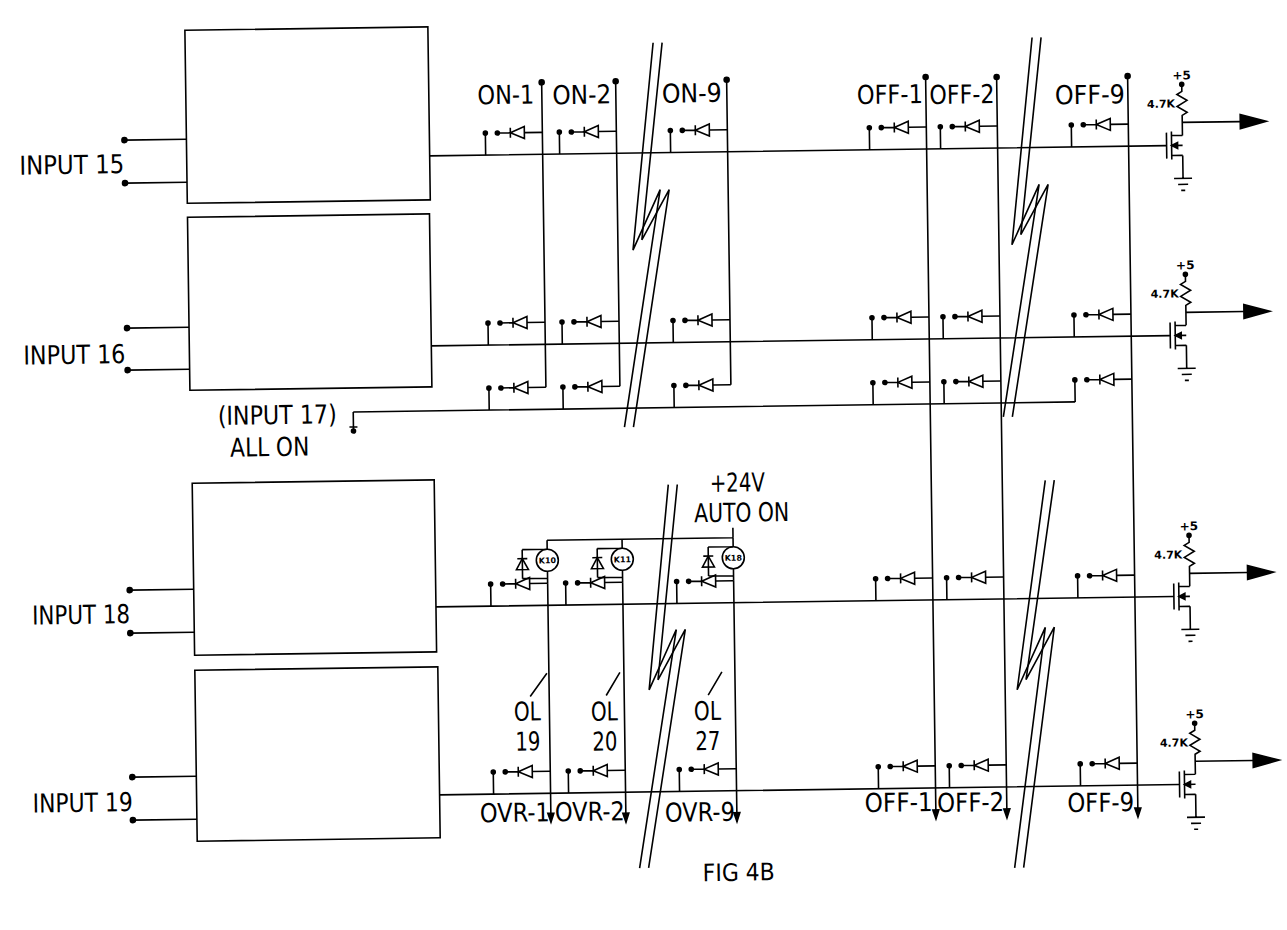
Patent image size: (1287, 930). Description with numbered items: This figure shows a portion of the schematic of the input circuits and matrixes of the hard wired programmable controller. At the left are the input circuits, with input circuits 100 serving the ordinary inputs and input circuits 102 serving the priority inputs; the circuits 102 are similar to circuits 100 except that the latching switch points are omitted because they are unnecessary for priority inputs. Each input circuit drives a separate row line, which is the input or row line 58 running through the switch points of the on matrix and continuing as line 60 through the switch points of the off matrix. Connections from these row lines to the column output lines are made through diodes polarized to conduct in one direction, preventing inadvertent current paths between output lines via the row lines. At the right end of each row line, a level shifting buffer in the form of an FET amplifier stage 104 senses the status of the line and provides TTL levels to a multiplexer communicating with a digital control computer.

The input line 58 is at (496, 161).
The input line 60 is at (849, 153).
The input circuit 100 is at (438, 77).
The input circuit 102 is at (437, 534).
The FET amplifier stage 104 is at (1192, 153).